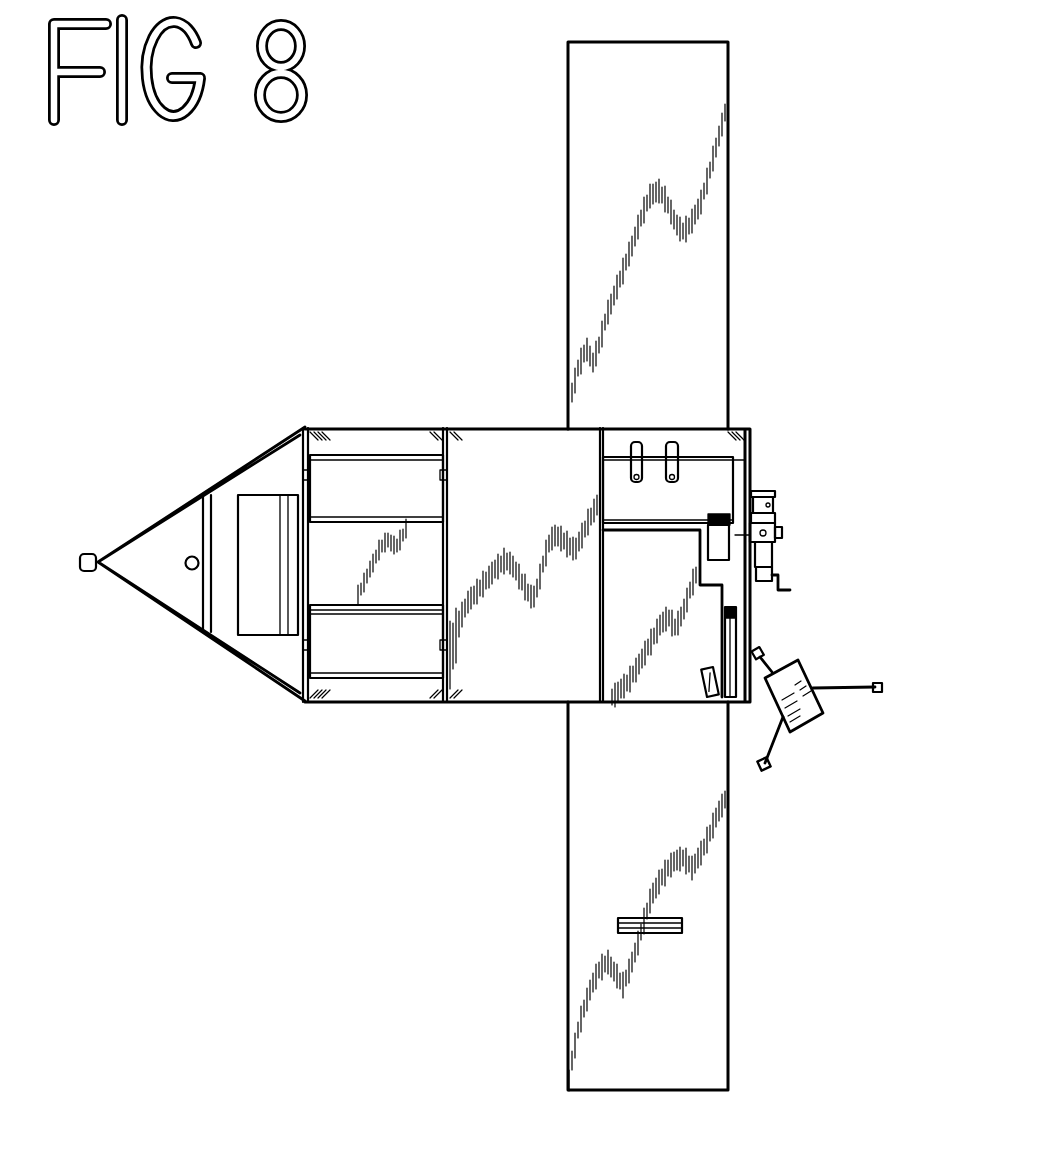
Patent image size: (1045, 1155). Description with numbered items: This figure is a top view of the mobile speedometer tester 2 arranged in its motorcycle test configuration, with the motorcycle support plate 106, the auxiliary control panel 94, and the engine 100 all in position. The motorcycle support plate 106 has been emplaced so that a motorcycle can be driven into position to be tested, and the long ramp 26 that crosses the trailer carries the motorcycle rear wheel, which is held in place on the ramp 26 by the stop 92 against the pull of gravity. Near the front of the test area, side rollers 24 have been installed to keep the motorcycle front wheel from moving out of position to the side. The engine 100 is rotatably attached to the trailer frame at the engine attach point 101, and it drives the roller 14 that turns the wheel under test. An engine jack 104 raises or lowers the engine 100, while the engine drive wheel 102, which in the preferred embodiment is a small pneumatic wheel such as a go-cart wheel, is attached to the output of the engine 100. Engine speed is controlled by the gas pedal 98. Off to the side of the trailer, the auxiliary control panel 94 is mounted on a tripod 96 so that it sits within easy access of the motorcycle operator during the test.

The mobile speedometer tester 2 is at (248, 293).
The ramp 26 is at (568, 205).
The side rollers 24 is at (687, 453).
The roller 14 is at (752, 470).
The engine attach point 101 is at (767, 489).
The engine 100 is at (777, 553).
The engine jack 104 is at (790, 585).
The engine drive wheel 102 is at (723, 560).
The auxiliary control panel 94 is at (810, 677).
The tripod 96 is at (850, 688).
The gas pedal 98 is at (707, 700).
The motorcycle support plate 106 is at (613, 665).
The stop 92 is at (682, 925).